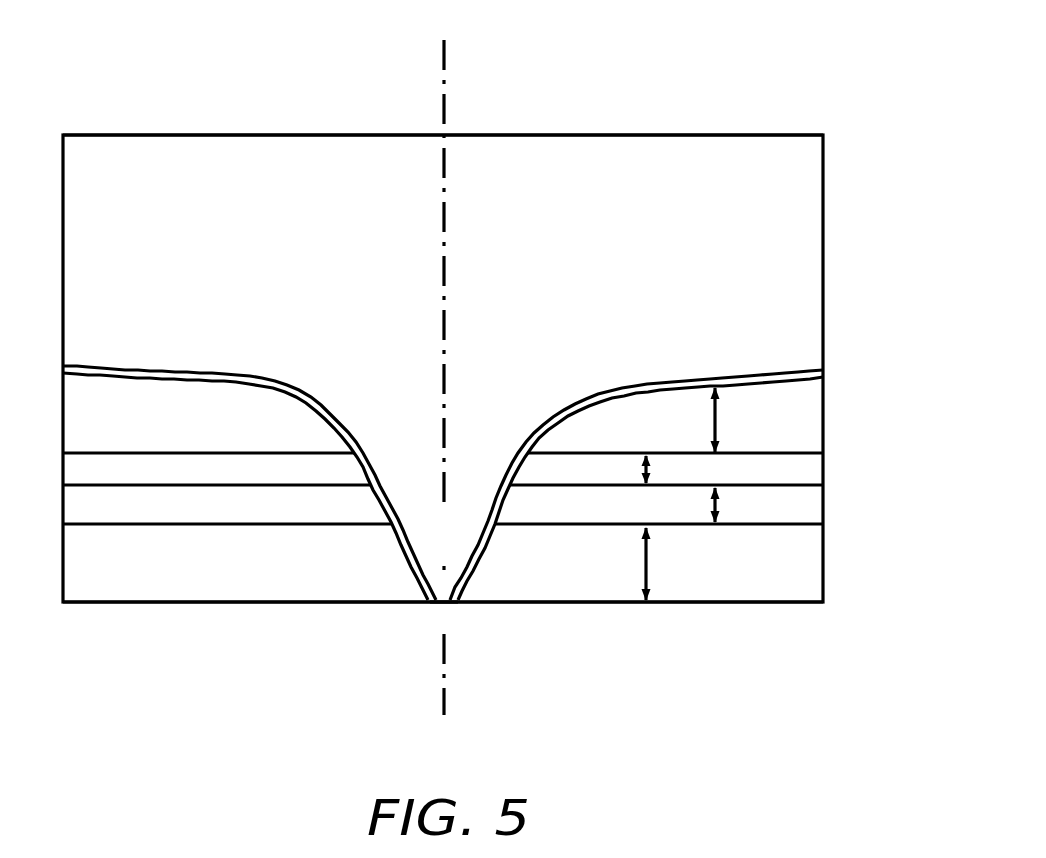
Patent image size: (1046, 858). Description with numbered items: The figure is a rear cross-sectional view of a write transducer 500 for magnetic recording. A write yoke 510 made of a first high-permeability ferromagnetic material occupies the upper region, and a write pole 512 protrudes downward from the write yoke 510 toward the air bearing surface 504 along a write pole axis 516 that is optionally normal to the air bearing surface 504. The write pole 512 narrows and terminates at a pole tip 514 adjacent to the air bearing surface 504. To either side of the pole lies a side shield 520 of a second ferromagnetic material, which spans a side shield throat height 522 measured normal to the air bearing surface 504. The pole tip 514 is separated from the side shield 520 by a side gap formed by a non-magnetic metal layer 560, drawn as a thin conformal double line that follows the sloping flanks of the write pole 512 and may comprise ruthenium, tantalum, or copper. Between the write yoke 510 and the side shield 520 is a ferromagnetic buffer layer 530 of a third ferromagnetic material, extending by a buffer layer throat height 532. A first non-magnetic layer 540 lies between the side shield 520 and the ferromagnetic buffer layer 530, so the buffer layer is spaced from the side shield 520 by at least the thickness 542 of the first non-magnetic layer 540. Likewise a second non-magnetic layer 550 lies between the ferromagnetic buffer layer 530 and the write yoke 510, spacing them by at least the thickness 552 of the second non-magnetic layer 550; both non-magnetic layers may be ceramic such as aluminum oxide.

The write transducer 500 is at (634, 66).
The air bearing surface 504 is at (303, 603).
The write yoke 510 is at (183, 267).
The write pole 512 is at (463, 534).
The pole tip 514 is at (440, 603).
The write pole axis 516 is at (443, 107).
The side shield 520 is at (260, 573).
The side shield throat height 522 is at (643, 553).
The ferromagnetic buffer layer 530 is at (210, 472).
The buffer layer throat height 532 is at (640, 471).
The first non-magnetic layer 540 is at (260, 517).
The thickness of the first non-magnetic layer 542 is at (720, 505).
The second non-magnetic layer 550 is at (265, 435).
The thickness of the second non-magnetic layer 552 is at (718, 413).
The non-magnetic metal layer 560 is at (312, 402).